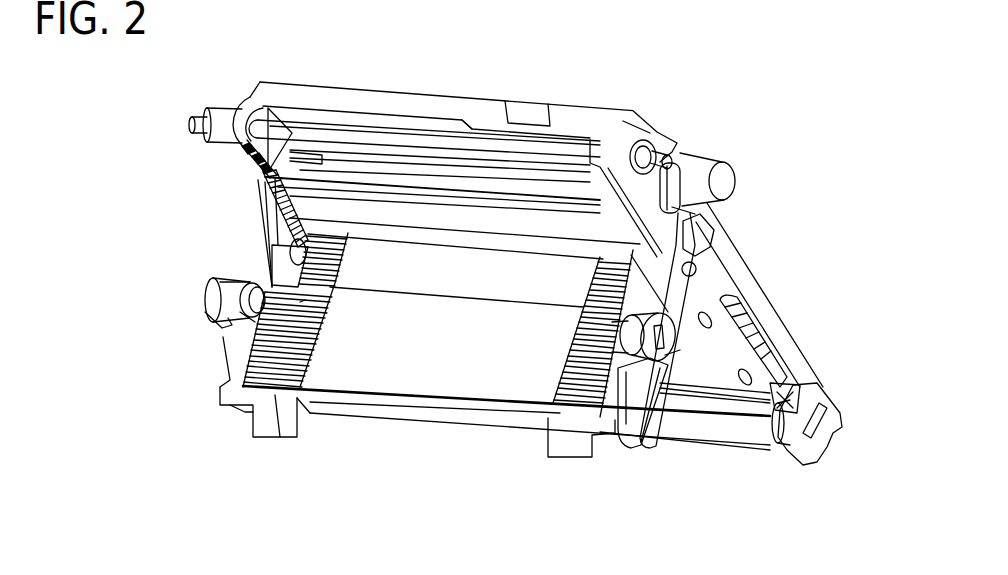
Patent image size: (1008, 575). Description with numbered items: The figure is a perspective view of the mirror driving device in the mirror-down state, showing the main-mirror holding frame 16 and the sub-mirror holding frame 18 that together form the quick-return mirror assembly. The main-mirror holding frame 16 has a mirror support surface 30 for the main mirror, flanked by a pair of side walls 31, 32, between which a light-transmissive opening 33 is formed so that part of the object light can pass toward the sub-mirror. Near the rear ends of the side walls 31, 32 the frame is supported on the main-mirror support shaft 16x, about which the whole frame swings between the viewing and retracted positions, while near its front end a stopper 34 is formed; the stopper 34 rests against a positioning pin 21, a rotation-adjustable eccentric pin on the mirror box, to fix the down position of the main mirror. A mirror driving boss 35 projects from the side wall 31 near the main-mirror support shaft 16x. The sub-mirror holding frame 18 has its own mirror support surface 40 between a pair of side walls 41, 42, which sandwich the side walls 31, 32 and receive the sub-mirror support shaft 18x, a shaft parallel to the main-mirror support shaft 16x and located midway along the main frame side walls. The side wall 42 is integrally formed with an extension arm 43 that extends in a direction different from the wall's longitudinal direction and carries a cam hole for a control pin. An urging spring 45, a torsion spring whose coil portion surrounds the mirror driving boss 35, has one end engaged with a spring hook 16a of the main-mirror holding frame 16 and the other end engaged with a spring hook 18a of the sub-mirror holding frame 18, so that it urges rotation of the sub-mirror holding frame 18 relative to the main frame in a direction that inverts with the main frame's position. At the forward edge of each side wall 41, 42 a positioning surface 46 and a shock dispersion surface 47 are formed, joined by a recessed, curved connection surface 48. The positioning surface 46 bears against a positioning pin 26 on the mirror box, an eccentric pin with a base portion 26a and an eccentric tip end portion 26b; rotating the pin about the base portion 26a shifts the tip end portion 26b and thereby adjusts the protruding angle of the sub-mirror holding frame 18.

The main-mirror holding frame 16 is at (394, 88).
The mirror support surface 30 is at (437, 213).
The main-mirror support shaft 16x is at (512, 198).
The spring hook 16a is at (660, 138).
The urging spring 45 is at (708, 155).
The mirror driving boss 35 is at (735, 183).
The spring hook 18a is at (710, 226).
The sub-mirror support shaft 18x is at (697, 270).
The side wall 31 is at (781, 314).
The light-transmissive opening 33 is at (743, 362).
The sub-mirror holding frame 18 is at (415, 426).
The side wall 42 is at (222, 384).
The mirror support surface 40 is at (273, 390).
The side wall 32 is at (243, 147).
The extension arm 43 is at (263, 200).
The connection surface 48 is at (305, 300).
The positioning surface 46 is at (268, 264).
The positioning pin 26 is at (95, 252).
The tip end portion 26b is at (248, 278).
The base portion 26a is at (232, 308).
The shock dispersion surface 47 is at (213, 313).
The side wall 41 is at (650, 450).
The positioning pin 21 is at (772, 435).
The stopper 34 is at (765, 465).